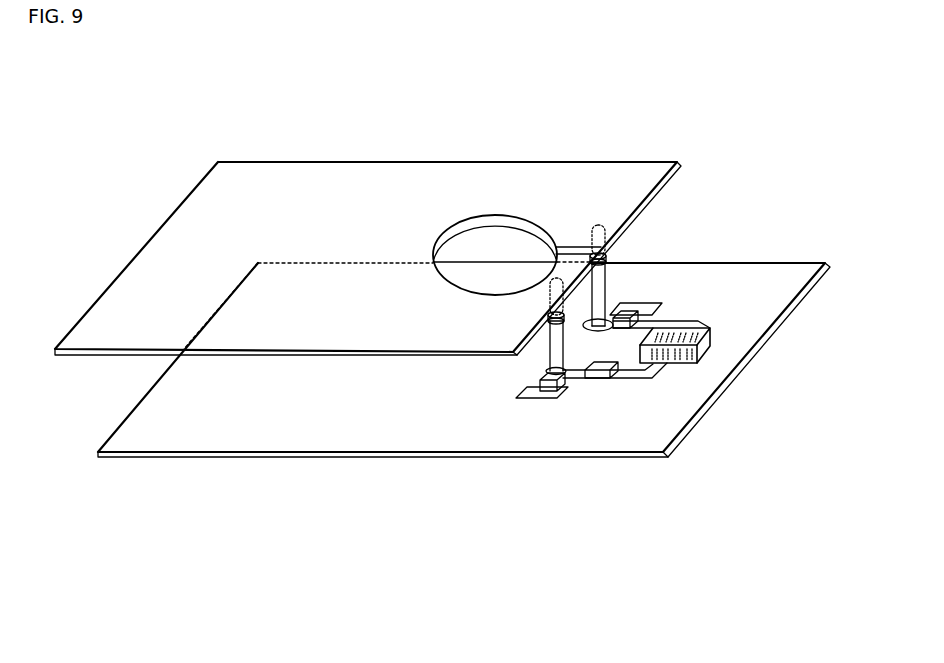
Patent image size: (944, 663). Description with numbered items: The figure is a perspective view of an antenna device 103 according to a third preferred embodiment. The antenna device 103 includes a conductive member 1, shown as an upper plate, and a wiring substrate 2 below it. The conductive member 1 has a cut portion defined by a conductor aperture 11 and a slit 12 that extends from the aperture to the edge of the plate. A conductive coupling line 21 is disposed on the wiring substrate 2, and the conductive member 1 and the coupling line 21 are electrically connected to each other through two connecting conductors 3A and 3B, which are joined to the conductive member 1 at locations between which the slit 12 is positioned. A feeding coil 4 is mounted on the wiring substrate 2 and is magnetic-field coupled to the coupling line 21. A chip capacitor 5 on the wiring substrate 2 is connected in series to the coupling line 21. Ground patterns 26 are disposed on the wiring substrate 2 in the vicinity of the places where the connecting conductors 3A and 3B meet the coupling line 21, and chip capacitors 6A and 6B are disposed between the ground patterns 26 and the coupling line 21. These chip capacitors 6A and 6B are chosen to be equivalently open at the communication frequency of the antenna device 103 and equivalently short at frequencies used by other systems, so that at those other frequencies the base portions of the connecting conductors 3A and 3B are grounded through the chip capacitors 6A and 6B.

The antenna device 103 is at (772, 73).
The conductive member 1 is at (198, 203).
The wiring substrate 2 is at (787, 275).
The conductor aperture 11 is at (506, 236).
The slit 12 is at (582, 246).
The connecting conductor 3A is at (555, 348).
The connecting conductor 3B is at (602, 282).
The feeding coil 4 is at (722, 326).
The chip capacitor 5 is at (600, 378).
The chip capacitor 6A is at (545, 389).
The chip capacitor 6B is at (634, 310).
The coupling line 21 is at (672, 323).
The ground pattern 26 is at (525, 395).